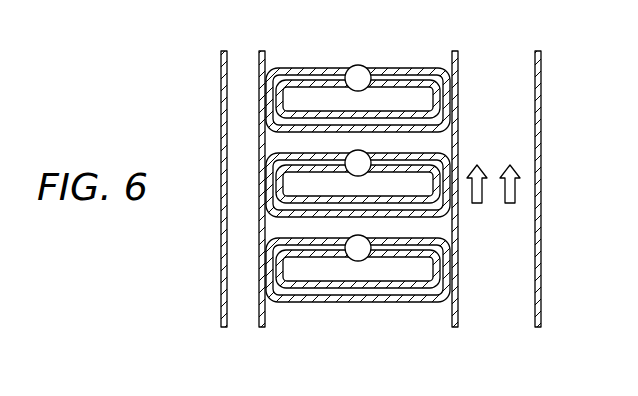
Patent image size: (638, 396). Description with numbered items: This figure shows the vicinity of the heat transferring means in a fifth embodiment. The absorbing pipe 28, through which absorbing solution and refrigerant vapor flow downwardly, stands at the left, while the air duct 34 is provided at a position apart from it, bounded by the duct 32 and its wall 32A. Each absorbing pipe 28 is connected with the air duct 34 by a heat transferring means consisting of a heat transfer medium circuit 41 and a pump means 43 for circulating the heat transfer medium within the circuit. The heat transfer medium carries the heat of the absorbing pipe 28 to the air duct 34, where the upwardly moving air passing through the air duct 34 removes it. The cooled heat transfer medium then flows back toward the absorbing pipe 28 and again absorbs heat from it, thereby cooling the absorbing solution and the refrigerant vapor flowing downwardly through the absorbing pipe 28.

The absorbing pipe 28 is at (221, 122).
The duct 32 is at (541, 68).
The wall of the duct 32A is at (458, 68).
The air duct 34 is at (524, 116).
The heat transfer medium circuit 41 is at (410, 68).
The pump means 43 is at (358, 65).